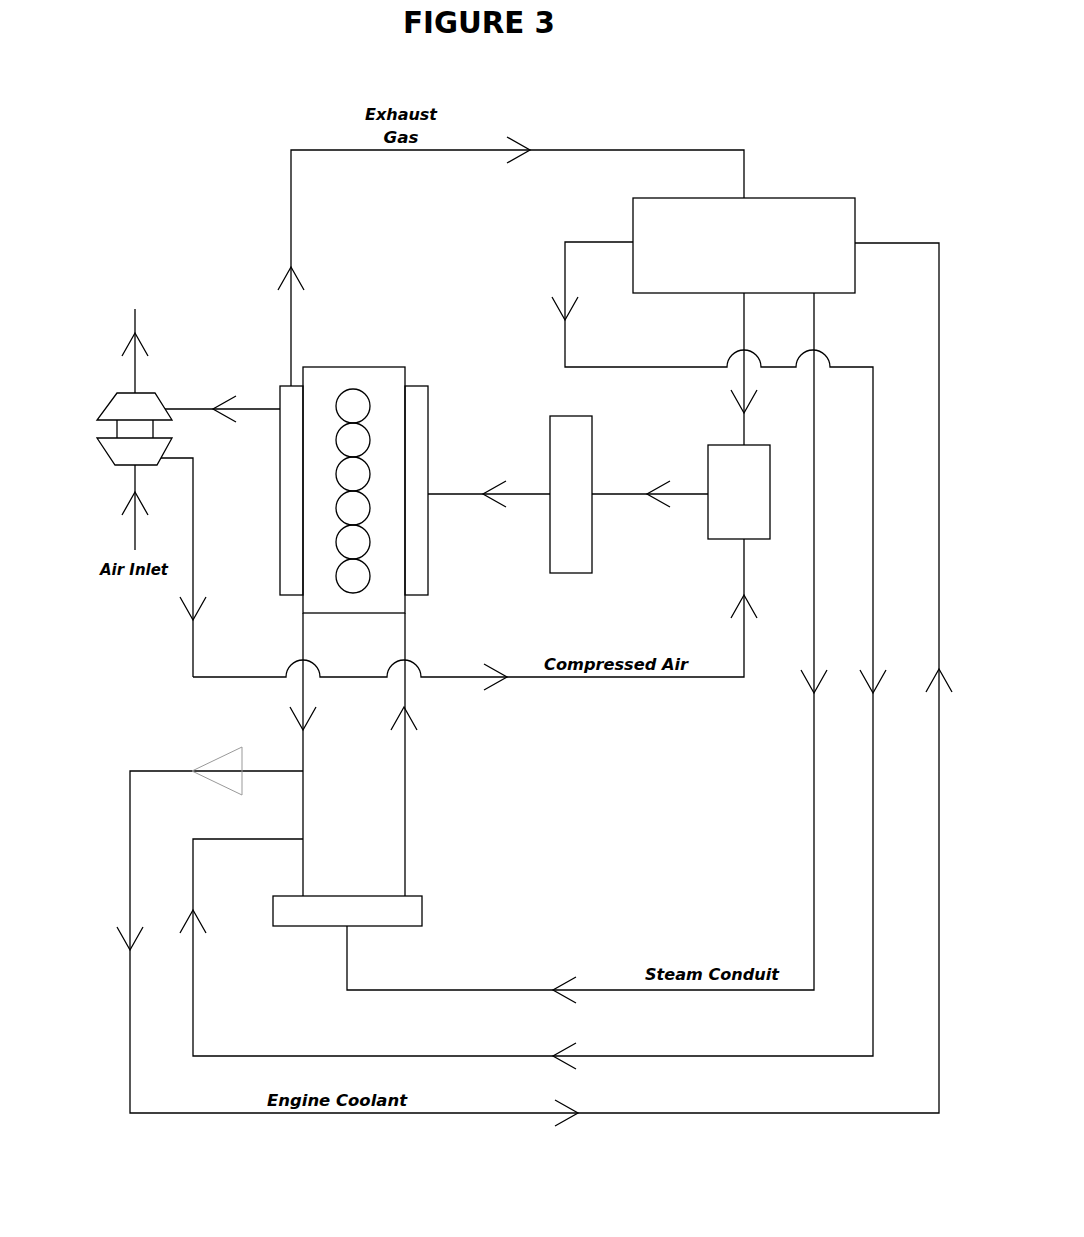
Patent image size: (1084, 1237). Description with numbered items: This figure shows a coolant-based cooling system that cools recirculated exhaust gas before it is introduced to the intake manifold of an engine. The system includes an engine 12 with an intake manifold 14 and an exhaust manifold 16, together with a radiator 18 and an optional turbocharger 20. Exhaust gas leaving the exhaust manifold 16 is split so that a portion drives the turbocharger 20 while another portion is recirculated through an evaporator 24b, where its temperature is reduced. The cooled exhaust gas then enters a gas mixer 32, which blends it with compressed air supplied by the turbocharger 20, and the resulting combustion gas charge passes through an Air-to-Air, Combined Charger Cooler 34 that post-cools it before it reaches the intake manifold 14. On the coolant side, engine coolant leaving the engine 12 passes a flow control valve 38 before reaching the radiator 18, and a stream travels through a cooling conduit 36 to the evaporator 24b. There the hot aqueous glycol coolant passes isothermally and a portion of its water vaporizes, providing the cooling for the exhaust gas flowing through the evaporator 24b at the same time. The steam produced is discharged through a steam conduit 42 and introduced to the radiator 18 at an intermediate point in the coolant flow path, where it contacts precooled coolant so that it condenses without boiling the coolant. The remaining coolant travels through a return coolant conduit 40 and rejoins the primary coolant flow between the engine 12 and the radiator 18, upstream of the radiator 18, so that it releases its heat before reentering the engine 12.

The engine 12 is at (354, 631).
The intake manifold 14 is at (432, 490).
The exhaust manifold 16 is at (273, 490).
The radiator 18 is at (365, 915).
The turbocharger 20 is at (112, 429).
The evaporator 24b is at (744, 245).
The gas mixer 32 is at (739, 492).
The Air-to-Air Combined Charger Cooler (AA-CCC) 34 is at (571, 494).
The cooling conduit 36 is at (506, 684).
The flow control valve 38 is at (207, 759).
The return coolant conduit 40 is at (533, 655).
The steam conduit 42 is at (587, 648).